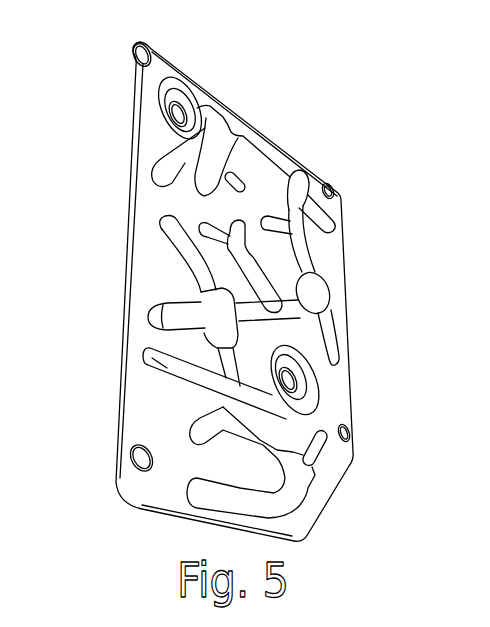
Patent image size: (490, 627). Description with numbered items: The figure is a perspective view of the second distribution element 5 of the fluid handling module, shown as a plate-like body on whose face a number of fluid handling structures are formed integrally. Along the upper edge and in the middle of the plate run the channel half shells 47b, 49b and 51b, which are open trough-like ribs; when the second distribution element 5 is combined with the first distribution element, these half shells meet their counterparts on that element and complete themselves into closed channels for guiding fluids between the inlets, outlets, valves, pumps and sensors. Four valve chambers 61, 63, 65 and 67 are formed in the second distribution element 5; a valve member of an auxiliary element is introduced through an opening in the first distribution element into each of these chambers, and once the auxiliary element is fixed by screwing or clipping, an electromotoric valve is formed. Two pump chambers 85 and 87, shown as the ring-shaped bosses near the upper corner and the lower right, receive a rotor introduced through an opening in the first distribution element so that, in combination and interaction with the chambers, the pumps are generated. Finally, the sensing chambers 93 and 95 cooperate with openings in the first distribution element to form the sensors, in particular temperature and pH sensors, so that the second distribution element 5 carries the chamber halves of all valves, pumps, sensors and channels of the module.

The second distribution element 5 is at (236, 113).
The pump chamber 85 is at (174, 103).
The sensing chamber 95 is at (152, 160).
The channel half shell 47b is at (258, 127).
The valve chamber 67 is at (297, 186).
The valve chamber 65 is at (310, 288).
The channel half shell 49b is at (297, 300).
The valve chamber 63 is at (200, 292).
The sensing chamber 93 is at (143, 357).
The channel half shell 51b is at (243, 400).
The pump chamber 87 is at (308, 378).
The valve chamber 61 is at (305, 478).